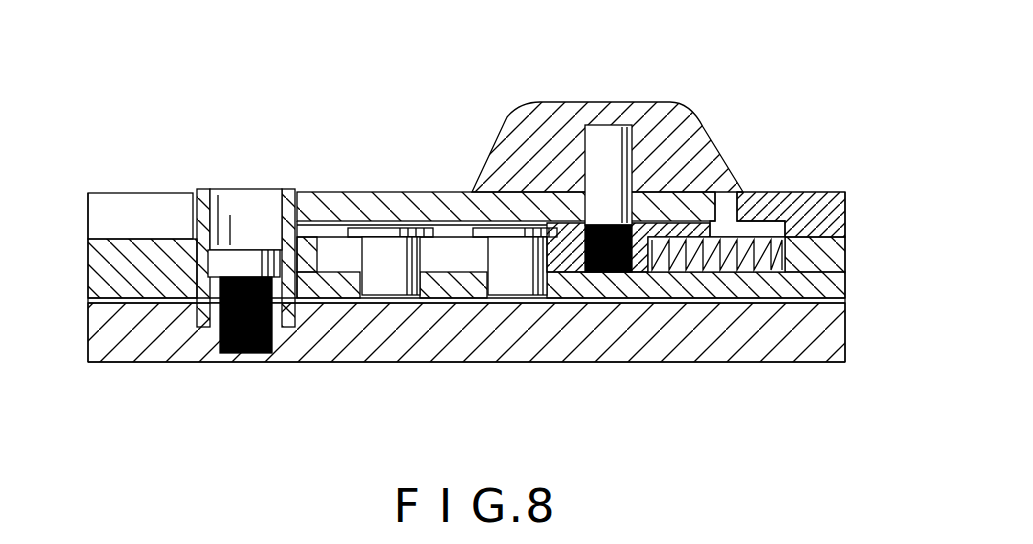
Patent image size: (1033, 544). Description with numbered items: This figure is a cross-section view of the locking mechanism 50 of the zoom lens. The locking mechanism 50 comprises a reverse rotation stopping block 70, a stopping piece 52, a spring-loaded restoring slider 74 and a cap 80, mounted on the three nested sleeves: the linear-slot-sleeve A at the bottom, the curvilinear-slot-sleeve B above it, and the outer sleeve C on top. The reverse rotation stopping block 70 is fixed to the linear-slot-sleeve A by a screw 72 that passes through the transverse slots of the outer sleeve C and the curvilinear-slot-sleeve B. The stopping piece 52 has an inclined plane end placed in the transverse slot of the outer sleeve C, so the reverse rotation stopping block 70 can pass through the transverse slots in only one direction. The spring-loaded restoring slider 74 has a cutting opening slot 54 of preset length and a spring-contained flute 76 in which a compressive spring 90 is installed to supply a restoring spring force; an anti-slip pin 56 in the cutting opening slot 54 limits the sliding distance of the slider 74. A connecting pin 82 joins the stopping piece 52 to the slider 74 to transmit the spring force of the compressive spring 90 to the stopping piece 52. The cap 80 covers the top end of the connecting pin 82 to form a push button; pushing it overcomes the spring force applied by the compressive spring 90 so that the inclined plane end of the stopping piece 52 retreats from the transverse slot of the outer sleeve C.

The locking mechanism 50 is at (697, 66).
The stopping piece 52 is at (344, 193).
The cutting opening slot 54 is at (337, 265).
The anti-slip pin 56 is at (392, 262).
The reverse rotation stopping block 70 is at (198, 328).
The screw 72 is at (247, 353).
The spring-loaded restoring slider 74 is at (568, 270).
The spring-contained flute 76 is at (713, 235).
The cap 80 is at (698, 130).
The connecting pin 82 is at (590, 157).
The compressive spring 90 is at (738, 272).
The linear-slot-sleeve A is at (835, 337).
The curvilinear-slot-sleeve B is at (833, 267).
The outer sleeve C is at (832, 210).